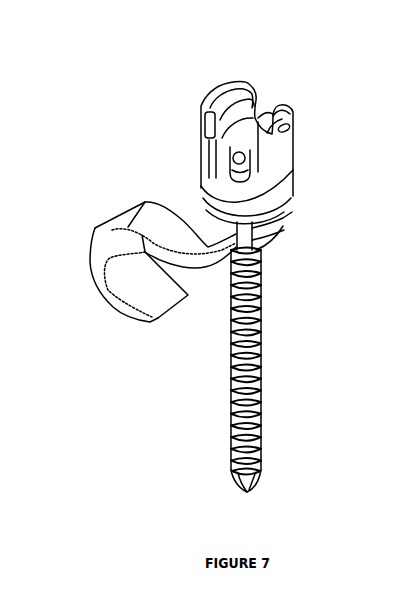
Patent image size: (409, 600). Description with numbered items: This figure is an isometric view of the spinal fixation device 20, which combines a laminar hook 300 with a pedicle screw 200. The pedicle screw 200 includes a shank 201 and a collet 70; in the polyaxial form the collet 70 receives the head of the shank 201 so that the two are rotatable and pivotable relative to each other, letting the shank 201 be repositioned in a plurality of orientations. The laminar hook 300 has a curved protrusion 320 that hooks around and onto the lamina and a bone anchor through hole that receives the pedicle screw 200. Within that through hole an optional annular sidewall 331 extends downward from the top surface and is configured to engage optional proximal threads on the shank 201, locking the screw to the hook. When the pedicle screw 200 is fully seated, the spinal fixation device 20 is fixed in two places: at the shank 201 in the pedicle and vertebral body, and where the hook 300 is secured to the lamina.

The spinal fixation device 20 is at (298, 266).
The pedicle screw 200 is at (300, 139).
The collet 70 is at (290, 189).
The annular sidewall 331 is at (279, 219).
The shank 201 is at (262, 364).
The laminar hook 300 is at (122, 259).
The curved protrusion 320 is at (96, 283).